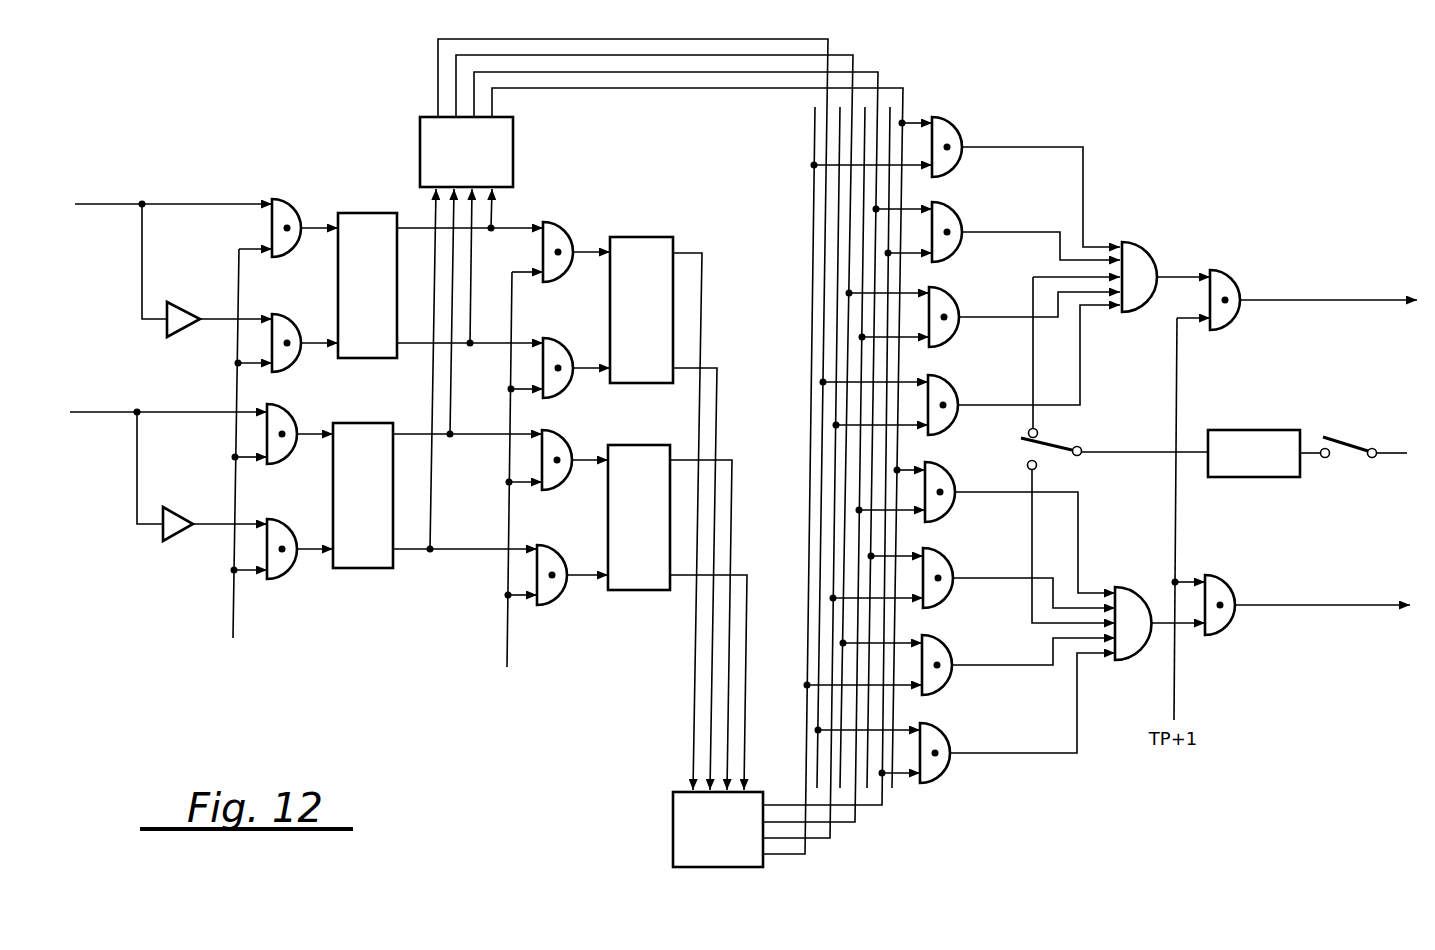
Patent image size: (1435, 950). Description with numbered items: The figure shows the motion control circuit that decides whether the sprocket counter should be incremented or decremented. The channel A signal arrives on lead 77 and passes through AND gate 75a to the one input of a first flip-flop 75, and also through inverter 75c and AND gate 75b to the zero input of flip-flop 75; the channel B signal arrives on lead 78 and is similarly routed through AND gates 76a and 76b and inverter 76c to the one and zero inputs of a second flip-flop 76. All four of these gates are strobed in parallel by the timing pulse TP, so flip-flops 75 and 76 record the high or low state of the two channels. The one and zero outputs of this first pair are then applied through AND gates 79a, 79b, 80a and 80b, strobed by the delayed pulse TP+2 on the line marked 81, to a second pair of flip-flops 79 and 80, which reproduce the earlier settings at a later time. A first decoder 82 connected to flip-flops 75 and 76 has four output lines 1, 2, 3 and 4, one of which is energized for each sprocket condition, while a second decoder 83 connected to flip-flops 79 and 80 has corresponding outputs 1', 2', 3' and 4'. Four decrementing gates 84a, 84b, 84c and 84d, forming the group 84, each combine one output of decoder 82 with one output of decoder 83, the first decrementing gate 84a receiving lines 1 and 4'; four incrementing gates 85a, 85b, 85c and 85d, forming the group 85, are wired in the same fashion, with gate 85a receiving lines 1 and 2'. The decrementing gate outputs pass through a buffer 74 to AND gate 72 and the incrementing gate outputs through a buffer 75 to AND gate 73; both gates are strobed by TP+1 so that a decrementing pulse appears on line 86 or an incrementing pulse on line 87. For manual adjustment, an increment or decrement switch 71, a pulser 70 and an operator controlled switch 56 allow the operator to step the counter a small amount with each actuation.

The lead 77 is at (120, 207).
The lead 78 is at (110, 417).
The first flip-flop / buffer 75 is at (357, 212).
The AND gate 75a is at (292, 199).
The AND gate 75b is at (289, 313).
The inverter 75c is at (184, 310).
The second flip-flop 76 is at (357, 423).
The AND gate 76a is at (297, 415).
The AND gate 76b is at (287, 518).
The inverter 76c is at (175, 513).
The flip-flop 79 is at (232, 611).
The AND gate 79a is at (566, 222).
The AND gate 79b is at (563, 338).
The flip-flop 80 is at (630, 445).
The AND gate 80a is at (568, 430).
The AND gate 80b is at (560, 545).
The TP+2 clock line 81 is at (507, 621).
The first decoder 82 is at (513, 128).
The second decoder 83 is at (672, 824).
The decrementing gates 84 is at (1013, 284).
The first decrementing gate 84a is at (958, 131).
The decrementing gate 84b is at (960, 215).
The decrementing gate 84c is at (955, 338).
The decrementing gate 84d is at (957, 397).
The incrementing gates 85 is at (1003, 635).
The first incrementing gate 85a is at (957, 483).
The incrementing gate 85b is at (955, 559).
The incrementing gate 85c is at (955, 690).
The incrementing gate 85d is at (950, 729).
The increment or decrement switch 71 is at (1050, 441).
The buffer 74 is at (1147, 256).
The AND gate 72 is at (1238, 279).
The AND gate 73 is at (1240, 590).
The line 86 is at (1383, 304).
The line 87 is at (1383, 611).
The pulser 70 is at (1242, 430).
The operator controlled switch 56 is at (1335, 440).
The decoder output line 1 is at (710, 426).
The decoder output line 2 is at (689, 418).
The decoder output line 3 is at (667, 410).
The decoder output line 4 is at (646, 402).
The decoder output line 1' is at (836, 467).
The decoder output line 2' is at (826, 482).
The decoder output line 3' is at (814, 496).
The decoder output line 4' is at (795, 504).